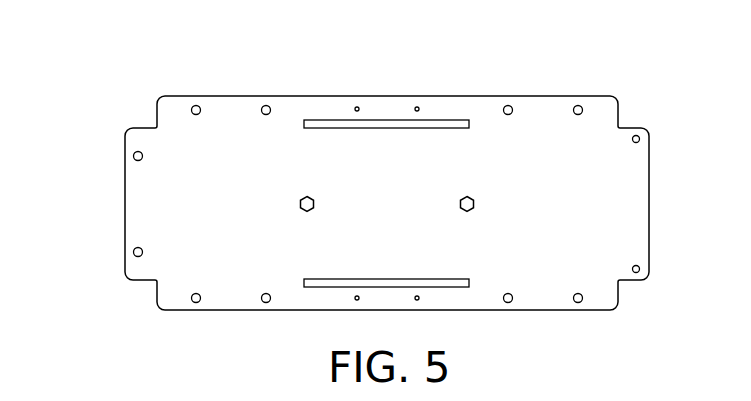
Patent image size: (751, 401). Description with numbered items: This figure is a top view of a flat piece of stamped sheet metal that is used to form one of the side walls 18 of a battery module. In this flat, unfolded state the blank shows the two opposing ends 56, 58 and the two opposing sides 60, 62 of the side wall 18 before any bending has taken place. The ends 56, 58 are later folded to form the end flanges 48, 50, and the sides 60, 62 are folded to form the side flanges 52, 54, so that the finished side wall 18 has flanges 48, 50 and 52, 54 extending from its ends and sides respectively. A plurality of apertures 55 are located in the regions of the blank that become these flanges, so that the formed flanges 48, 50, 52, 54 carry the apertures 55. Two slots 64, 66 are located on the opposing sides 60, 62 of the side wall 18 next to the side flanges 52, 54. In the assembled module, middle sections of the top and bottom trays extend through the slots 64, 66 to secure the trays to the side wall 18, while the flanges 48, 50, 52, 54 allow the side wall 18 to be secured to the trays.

The side wall 18 is at (628, 64).
The end flange 48 is at (635, 208).
The end flange 50 is at (148, 198).
The side flange 52 is at (539, 110).
The side flange 54 is at (548, 296).
The apertures 55 is at (267, 105).
The opposing end 56 is at (649, 155).
The opposing end 58 is at (125, 167).
The opposing side 60 is at (318, 96).
The opposing side 62 is at (290, 310).
The slot 64 is at (392, 124).
The slot 66 is at (454, 283).